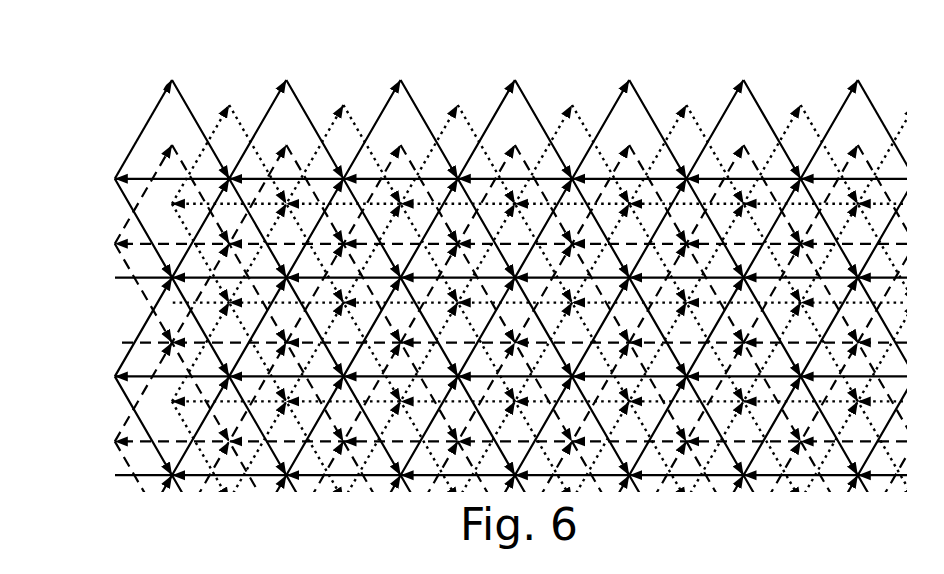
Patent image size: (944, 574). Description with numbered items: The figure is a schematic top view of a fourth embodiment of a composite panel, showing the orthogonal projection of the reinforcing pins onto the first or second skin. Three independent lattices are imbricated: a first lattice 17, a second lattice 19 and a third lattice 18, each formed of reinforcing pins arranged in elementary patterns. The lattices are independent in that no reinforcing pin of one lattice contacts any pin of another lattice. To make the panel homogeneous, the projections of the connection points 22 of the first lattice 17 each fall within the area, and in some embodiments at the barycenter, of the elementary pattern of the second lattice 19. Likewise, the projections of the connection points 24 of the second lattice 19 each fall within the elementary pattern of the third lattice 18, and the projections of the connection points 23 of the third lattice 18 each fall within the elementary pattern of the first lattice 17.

The first lattice 17 is at (151, 116).
The third lattice 18 is at (150, 185).
The second lattice 19 is at (172, 204).
The connection points of the first lattice 22 is at (229, 176).
The connection points of the third lattice 23 is at (228, 245).
The connection points of the second lattice 24 is at (287, 203).